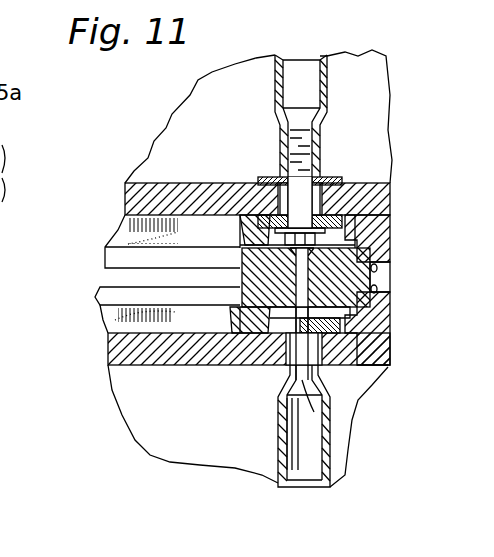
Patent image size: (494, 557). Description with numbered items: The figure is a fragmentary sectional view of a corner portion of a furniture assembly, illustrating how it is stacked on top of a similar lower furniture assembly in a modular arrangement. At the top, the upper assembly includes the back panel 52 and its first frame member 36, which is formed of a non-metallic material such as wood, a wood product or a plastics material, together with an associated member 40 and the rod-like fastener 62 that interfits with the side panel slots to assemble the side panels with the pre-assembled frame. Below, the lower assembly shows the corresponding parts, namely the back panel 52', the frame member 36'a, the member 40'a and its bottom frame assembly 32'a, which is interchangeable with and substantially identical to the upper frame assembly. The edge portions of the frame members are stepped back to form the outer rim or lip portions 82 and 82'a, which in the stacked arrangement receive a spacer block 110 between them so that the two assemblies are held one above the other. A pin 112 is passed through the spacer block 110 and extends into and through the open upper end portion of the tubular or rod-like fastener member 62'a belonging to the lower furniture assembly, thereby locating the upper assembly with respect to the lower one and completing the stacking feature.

The back panel 52 is at (258, 132).
The back panel 52' is at (249, 410).
The rod-like fastener 62 is at (279, 150).
The tubular fastener member 62'a is at (238, 434).
The upper mounting plate 40 is at (153, 211).
The lower mounting plate 40'a is at (126, 308).
The first frame member 36 is at (122, 216).
The first frame member 36'a is at (92, 329).
The spacer block 110 is at (242, 282).
The rim 82 is at (392, 253).
The rim 82'a is at (401, 325).
The bottom frame assembly 32'a is at (385, 392).
The pin 112 is at (324, 410).